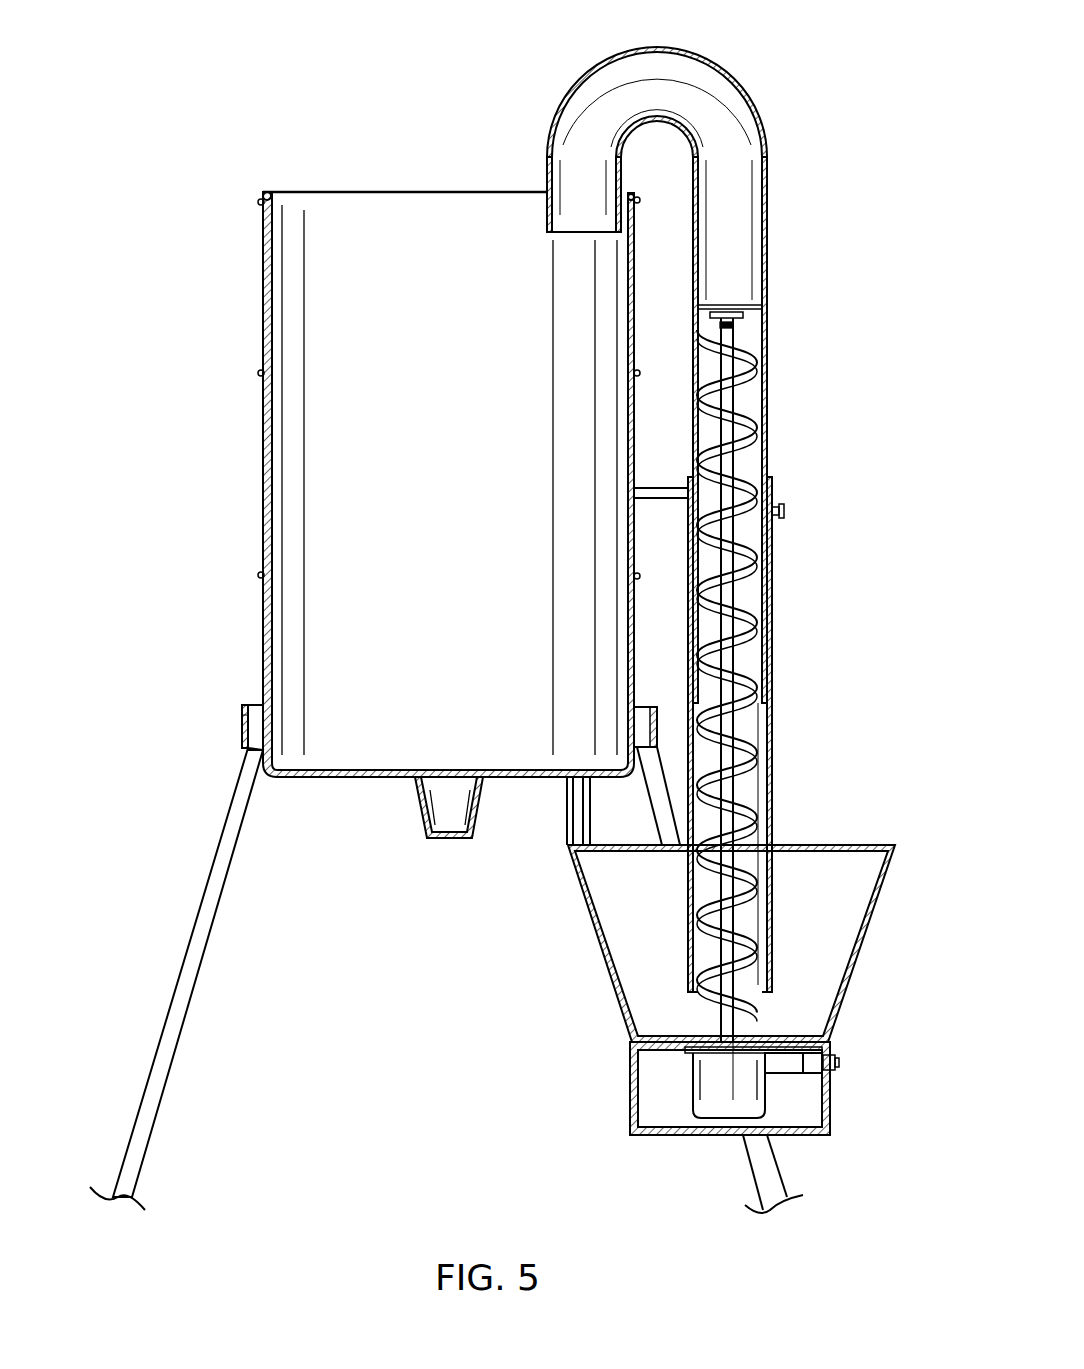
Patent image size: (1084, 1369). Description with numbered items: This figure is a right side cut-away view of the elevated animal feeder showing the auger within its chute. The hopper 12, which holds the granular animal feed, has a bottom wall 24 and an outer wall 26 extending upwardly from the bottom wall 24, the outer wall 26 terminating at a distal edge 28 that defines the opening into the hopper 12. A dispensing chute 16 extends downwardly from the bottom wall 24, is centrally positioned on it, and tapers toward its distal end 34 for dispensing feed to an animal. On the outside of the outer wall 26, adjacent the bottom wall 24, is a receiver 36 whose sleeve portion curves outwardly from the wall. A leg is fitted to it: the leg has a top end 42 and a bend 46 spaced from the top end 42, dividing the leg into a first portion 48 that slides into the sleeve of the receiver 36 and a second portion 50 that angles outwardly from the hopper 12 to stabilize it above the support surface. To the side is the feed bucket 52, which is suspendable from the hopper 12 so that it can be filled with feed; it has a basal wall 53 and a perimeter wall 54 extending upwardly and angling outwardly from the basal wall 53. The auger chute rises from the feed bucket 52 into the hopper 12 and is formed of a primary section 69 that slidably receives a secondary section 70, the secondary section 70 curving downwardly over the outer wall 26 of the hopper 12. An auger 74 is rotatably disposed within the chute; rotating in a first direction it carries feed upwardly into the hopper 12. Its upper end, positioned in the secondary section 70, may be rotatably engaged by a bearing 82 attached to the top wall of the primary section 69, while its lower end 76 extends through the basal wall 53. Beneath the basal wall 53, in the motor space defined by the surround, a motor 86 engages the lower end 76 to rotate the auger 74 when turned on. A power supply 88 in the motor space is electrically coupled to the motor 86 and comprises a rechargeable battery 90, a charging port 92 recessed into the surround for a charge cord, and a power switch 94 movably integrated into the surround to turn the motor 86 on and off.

The hopper 12 is at (265, 247).
The dispensing chute 16 is at (488, 800).
The bottom wall 24 is at (335, 785).
The outer wall 26 is at (263, 470).
The distal edge 28 is at (323, 192).
The distal end 34 is at (452, 840).
The receiver 36 is at (245, 705).
The top end 42 is at (258, 705).
The bend 46 is at (234, 759).
The first portion 48 is at (232, 725).
The second portion 50 is at (168, 915).
The feed bucket 52 is at (729, 874).
The basal wall 53 is at (658, 1044).
The perimeter wall 54 is at (603, 947).
The primary section 69 is at (773, 750).
The secondary section 70 is at (767, 165).
The auger 74 is at (753, 553).
The lower end 76 is at (733, 1073).
The bearing 82 is at (742, 1035).
The motor 86 is at (697, 1100).
The power supply 88 is at (787, 1097).
The rechargeable battery 90 is at (802, 1135).
The charging port 92 is at (832, 1092).
The power switch 94 is at (838, 1063).